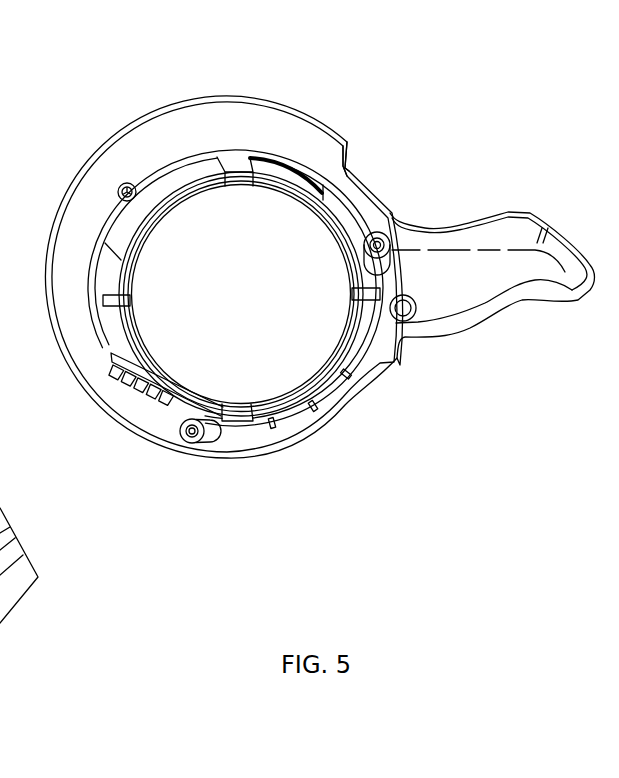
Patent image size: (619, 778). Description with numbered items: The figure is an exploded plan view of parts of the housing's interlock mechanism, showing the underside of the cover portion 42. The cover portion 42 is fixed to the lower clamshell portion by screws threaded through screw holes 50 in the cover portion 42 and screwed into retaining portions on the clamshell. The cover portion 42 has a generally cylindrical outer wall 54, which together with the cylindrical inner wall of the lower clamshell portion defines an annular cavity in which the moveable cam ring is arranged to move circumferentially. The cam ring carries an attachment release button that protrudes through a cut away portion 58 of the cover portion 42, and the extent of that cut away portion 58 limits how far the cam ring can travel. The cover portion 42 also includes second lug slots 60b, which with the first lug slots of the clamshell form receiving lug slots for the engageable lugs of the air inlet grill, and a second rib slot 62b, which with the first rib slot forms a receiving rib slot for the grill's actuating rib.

The cover portion 42 is at (93, 197).
The screw holes 50 is at (121, 187).
The outer wall 54 is at (157, 118).
The cut away portion 58 is at (357, 177).
The second lug slots 60b is at (238, 181).
The second rib slot 62b is at (120, 300).